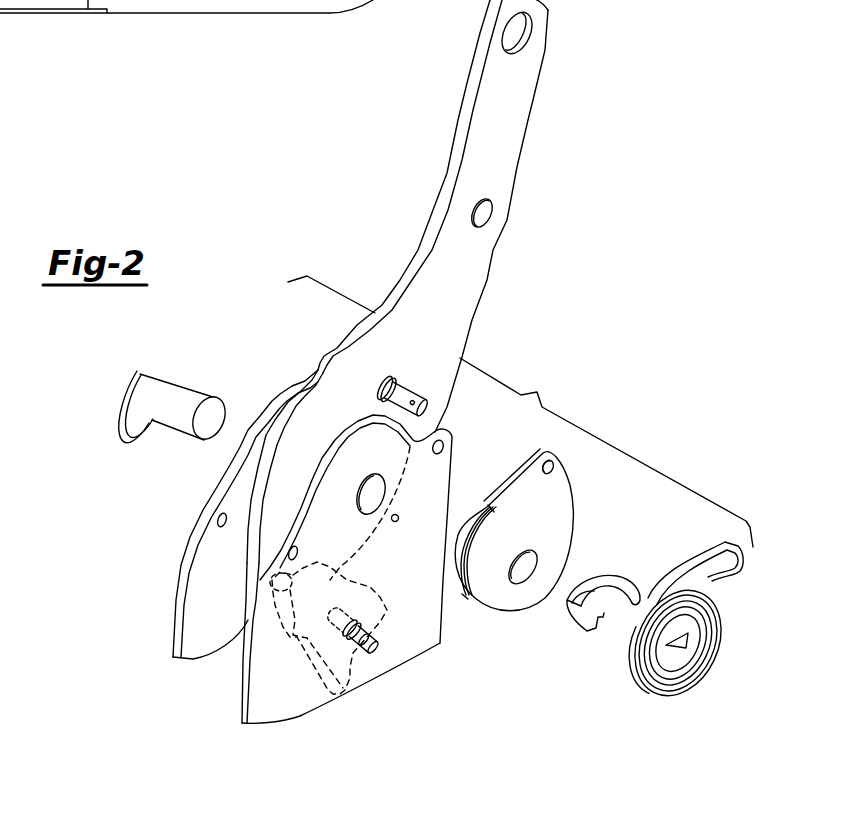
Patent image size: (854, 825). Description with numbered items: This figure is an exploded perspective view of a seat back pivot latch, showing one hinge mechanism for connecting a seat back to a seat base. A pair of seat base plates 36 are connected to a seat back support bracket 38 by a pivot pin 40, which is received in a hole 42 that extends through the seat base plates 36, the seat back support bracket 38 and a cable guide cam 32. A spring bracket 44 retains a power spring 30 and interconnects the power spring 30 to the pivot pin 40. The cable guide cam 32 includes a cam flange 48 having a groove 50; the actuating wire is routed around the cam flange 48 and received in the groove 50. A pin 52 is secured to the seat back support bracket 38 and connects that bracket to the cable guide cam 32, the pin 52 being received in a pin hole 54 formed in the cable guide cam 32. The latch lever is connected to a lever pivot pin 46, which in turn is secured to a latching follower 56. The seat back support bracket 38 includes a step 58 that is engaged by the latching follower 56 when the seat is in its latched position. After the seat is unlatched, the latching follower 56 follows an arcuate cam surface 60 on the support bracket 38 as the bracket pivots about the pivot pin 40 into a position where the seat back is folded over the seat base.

The power spring 30 is at (638, 648).
The cable guide cam 32 is at (563, 528).
The seat base plates 36 is at (255, 676).
The seat back support bracket 38 is at (472, 275).
The pivot pin 40 is at (188, 392).
The hole 42 is at (368, 497).
The spring bracket 44 is at (580, 615).
The lever pivot pin 46 is at (357, 622).
The cam flange 48 is at (463, 595).
The groove 50 is at (475, 518).
The pin 52 is at (403, 387).
The pin hole 54 is at (550, 470).
The latching follower 56 is at (347, 683).
The step 58 is at (290, 578).
The arcuate cam surface 60 is at (257, 497).